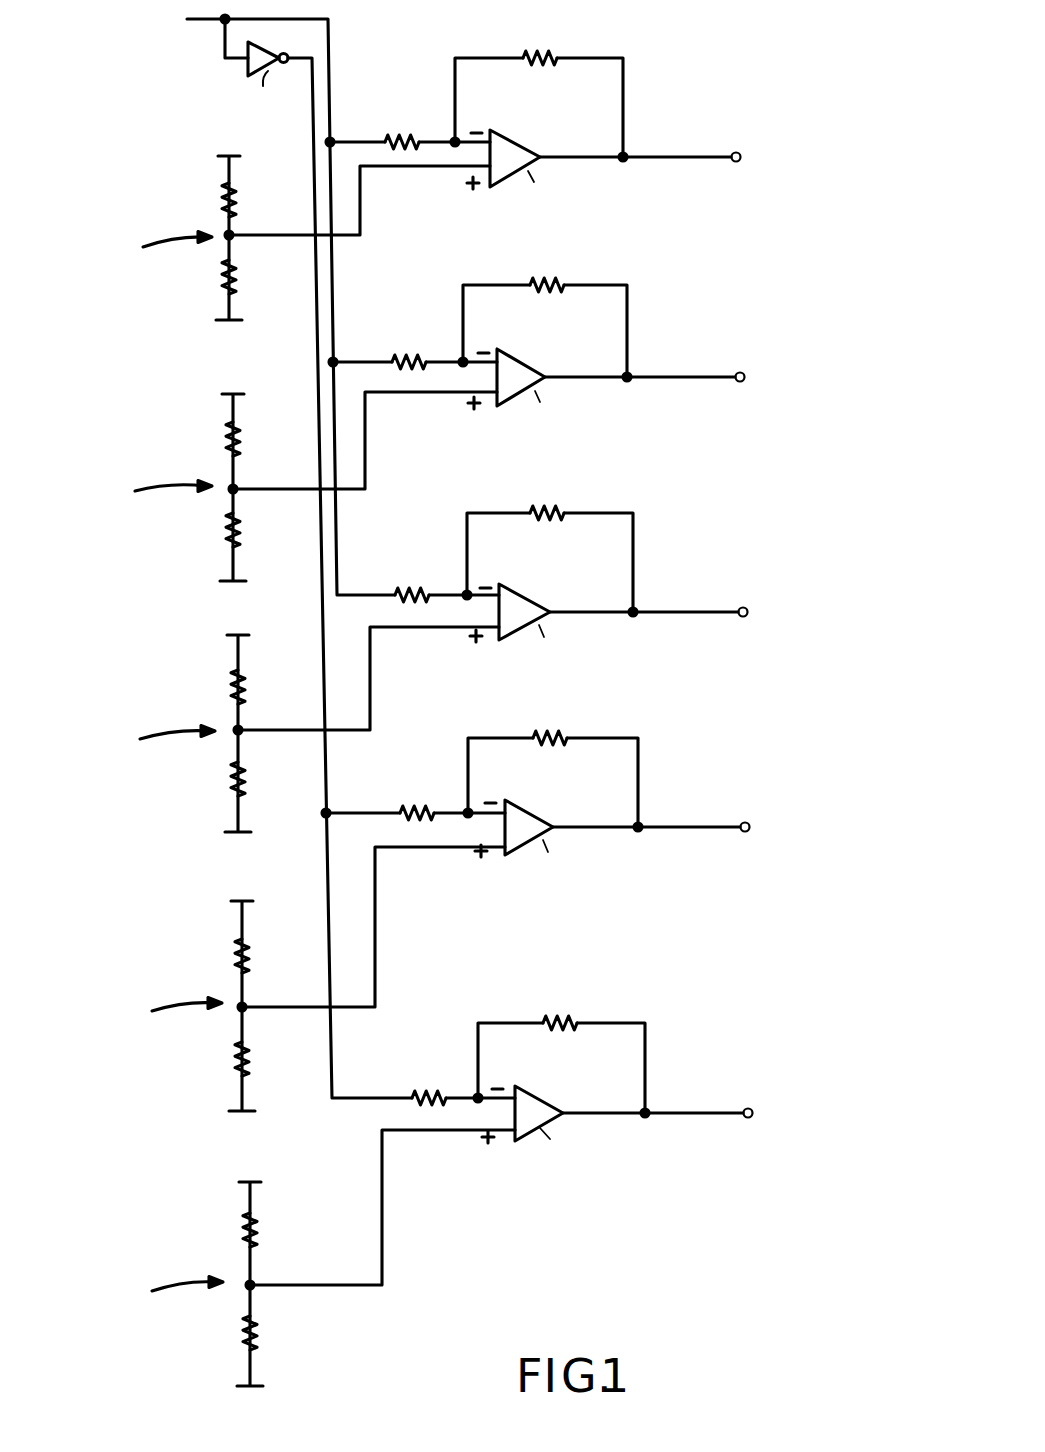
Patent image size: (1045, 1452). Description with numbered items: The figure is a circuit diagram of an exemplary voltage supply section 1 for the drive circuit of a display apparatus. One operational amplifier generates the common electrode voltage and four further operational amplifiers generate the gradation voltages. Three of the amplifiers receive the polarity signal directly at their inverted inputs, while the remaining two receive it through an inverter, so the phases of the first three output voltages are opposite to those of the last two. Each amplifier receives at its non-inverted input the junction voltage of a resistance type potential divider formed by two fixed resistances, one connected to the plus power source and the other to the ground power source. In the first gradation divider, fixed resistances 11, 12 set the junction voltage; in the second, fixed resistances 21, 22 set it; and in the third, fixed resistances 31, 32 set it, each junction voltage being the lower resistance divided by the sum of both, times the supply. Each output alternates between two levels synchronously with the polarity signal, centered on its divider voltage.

The voltage supply section 1 is at (424, 707).
The fixed resistance R11 11 is at (201, 689).
The fixed resistance R12 12 is at (204, 779).
The fixed resistance R21 21 is at (212, 958).
The fixed resistance R22 22 is at (212, 1062).
The fixed resistance R31 31 is at (217, 1233).
The fixed resistance R32 32 is at (217, 1337).